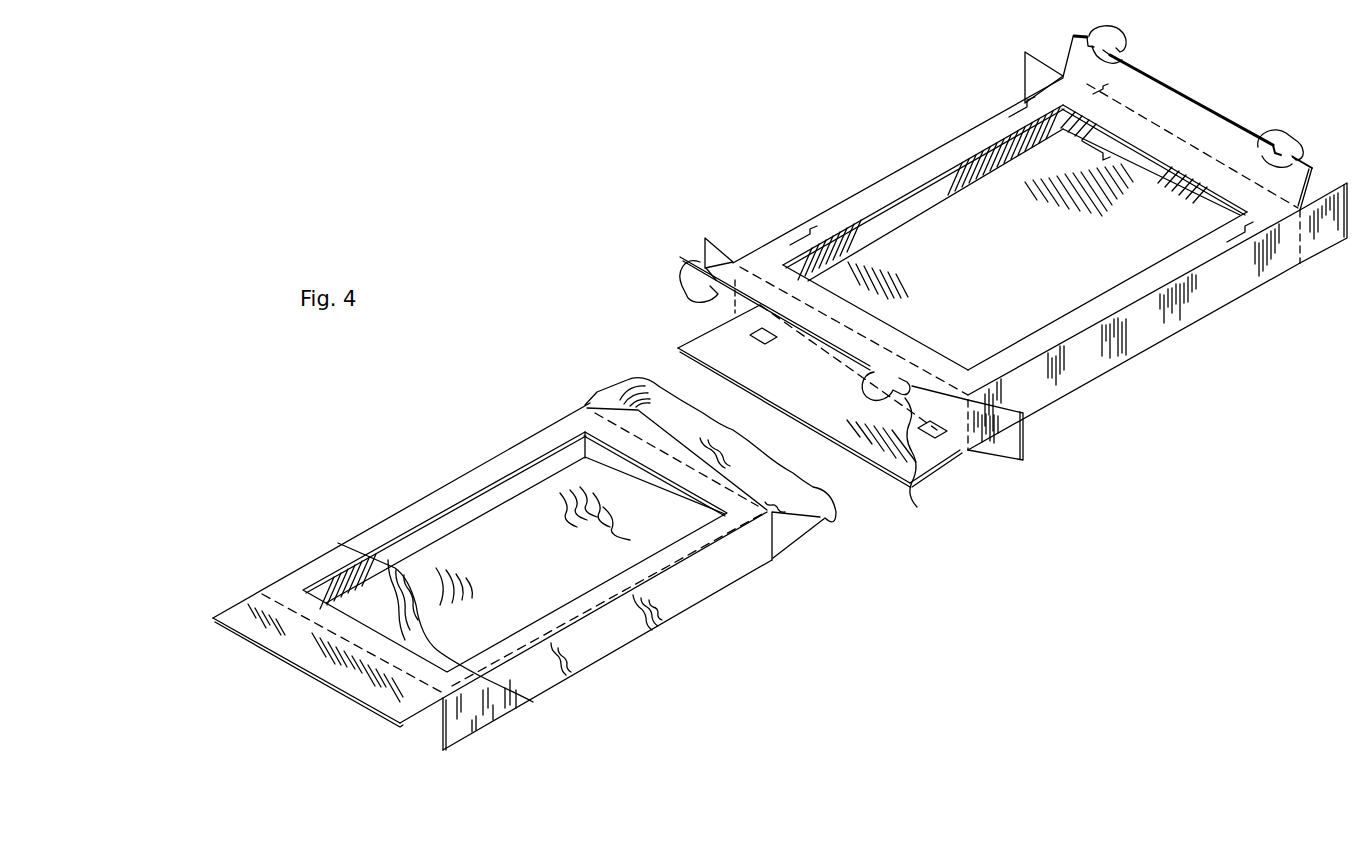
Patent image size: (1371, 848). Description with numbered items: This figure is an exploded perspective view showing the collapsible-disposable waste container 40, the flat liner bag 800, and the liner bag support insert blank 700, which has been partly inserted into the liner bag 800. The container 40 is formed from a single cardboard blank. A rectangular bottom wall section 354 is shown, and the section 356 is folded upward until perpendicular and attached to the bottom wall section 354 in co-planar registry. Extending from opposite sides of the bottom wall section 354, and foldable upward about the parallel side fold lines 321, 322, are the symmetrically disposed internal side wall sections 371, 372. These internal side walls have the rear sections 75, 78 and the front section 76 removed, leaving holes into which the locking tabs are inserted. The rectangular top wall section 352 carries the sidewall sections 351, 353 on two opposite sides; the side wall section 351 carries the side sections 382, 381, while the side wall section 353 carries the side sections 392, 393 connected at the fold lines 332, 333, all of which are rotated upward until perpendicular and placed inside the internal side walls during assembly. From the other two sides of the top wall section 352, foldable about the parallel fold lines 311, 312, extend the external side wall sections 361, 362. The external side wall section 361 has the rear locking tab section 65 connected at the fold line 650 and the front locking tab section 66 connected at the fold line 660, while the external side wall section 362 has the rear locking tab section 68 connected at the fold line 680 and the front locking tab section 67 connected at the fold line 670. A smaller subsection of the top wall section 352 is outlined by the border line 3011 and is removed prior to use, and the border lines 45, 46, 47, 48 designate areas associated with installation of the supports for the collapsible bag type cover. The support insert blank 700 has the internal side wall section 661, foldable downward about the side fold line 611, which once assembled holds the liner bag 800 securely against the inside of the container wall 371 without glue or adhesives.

The collapsible-disposable waste container 40 is at (1184, 336).
The border line 45 is at (1048, 351).
The border line 46 is at (796, 233).
The border line 47 is at (1008, 115).
The border line 48 is at (1258, 234).
The rear locking tab section 65 is at (886, 375).
The front locking tab section 66 is at (696, 292).
The front locking tab section 67 is at (1096, 40).
The rear locking tab section 68 is at (1298, 138).
The rear section 75 is at (748, 338).
The front section 76 is at (941, 438).
The rear section 78 is at (1091, 156).
The fold line 311 is at (929, 372).
The fold line 312 is at (1100, 79).
The side fold line 321 is at (872, 392).
The side fold line 322 is at (1222, 224).
The fold line 332 is at (998, 428).
The fold line 333 is at (1299, 262).
The side wall section 351 is at (904, 204).
The top wall section 352 is at (888, 185).
The side wall section 353 is at (1134, 356).
The rectangular bottom wall section 354 is at (1036, 272).
The section 356 is at (986, 188).
The external side wall section 361 is at (734, 261).
The external side wall section 362 is at (1199, 147).
The internal side wall section 371 is at (820, 396).
The internal side wall section 372 is at (1158, 167).
The side section 381 is at (1024, 78).
The side section 382 is at (680, 262).
The side section 392 is at (1007, 447).
The side section 393 is at (1334, 235).
The side fold line 611 is at (585, 655).
The fold line 650 is at (917, 480).
The fold line 660 is at (704, 258).
The internal side wall section 661 is at (325, 653).
The fold line 670 is at (1110, 60).
The fold line 680 is at (1274, 140).
The liner bag support insert blank 700 is at (229, 603).
The flat liner bag 800 is at (430, 492).
The border line 3011 is at (1126, 285).